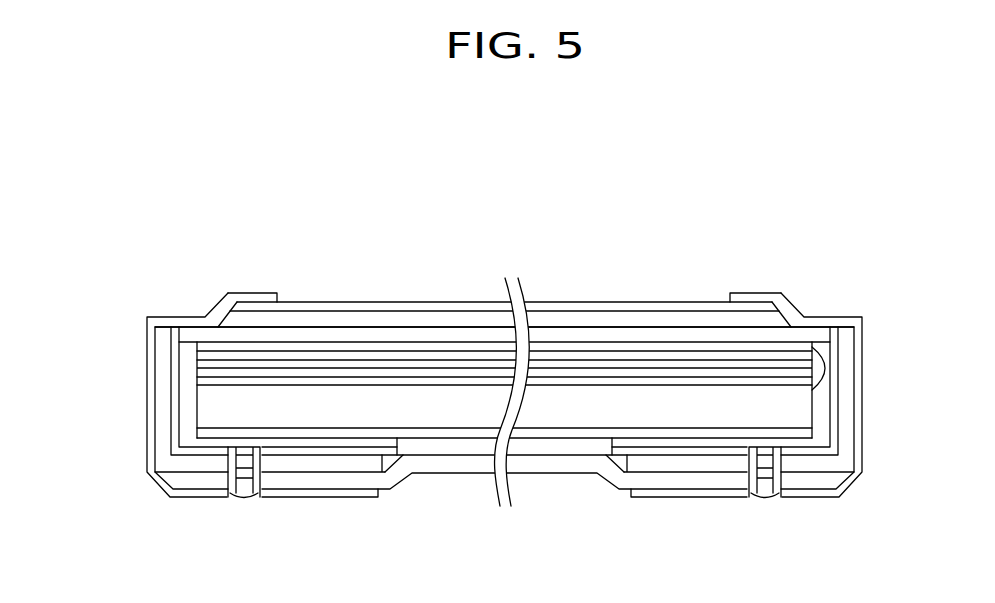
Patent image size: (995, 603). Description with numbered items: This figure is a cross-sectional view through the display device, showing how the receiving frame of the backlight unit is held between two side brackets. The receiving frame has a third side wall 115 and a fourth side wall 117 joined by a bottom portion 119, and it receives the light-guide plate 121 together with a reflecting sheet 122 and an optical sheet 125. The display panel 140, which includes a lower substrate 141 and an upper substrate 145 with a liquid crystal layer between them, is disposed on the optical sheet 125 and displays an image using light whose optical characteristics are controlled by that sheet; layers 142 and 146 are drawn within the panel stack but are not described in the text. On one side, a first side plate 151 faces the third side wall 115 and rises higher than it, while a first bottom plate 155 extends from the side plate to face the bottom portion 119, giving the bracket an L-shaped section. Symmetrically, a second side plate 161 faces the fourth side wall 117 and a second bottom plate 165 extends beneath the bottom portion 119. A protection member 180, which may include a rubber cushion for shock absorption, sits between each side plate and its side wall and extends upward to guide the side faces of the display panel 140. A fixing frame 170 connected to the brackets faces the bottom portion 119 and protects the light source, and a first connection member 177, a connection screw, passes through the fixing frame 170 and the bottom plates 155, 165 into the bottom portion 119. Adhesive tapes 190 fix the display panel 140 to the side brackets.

The third side wall 115 is at (187, 408).
The fourth side wall 117 is at (823, 428).
The bottom portion 119 is at (355, 447).
The light-guide plate 121 is at (585, 415).
The reflecting sheet 122 is at (670, 433).
The optical sheet 125 is at (822, 375).
The display panel 140 is at (733, 223).
The lower substrate 141 is at (670, 330).
The second layer 142 is at (716, 347).
The upper substrate 145 is at (618, 318).
The fourth layer 146 is at (574, 299).
The first side plate 151 is at (165, 335).
The first bottom plate 155 is at (304, 468).
The second side plate 161 is at (847, 398).
The second bottom plate 165 is at (712, 465).
The fixing frame 170 is at (442, 465).
The first connection member 177 is at (243, 500).
The protection member 180 is at (175, 370).
The adhesive tape 190 is at (255, 292).